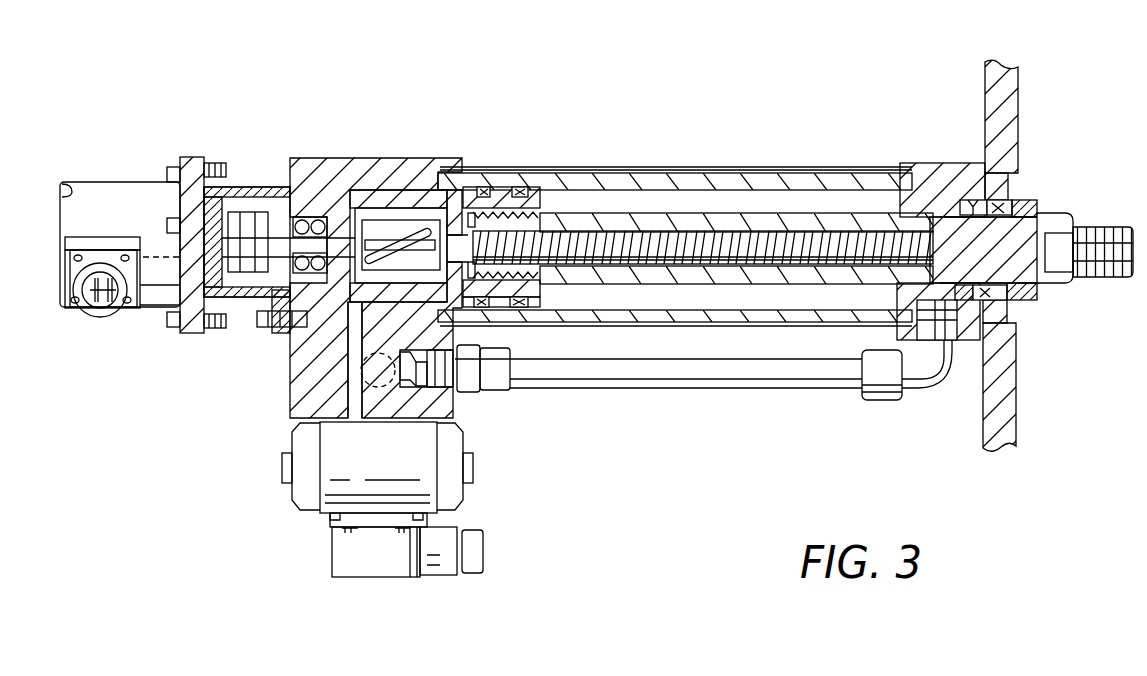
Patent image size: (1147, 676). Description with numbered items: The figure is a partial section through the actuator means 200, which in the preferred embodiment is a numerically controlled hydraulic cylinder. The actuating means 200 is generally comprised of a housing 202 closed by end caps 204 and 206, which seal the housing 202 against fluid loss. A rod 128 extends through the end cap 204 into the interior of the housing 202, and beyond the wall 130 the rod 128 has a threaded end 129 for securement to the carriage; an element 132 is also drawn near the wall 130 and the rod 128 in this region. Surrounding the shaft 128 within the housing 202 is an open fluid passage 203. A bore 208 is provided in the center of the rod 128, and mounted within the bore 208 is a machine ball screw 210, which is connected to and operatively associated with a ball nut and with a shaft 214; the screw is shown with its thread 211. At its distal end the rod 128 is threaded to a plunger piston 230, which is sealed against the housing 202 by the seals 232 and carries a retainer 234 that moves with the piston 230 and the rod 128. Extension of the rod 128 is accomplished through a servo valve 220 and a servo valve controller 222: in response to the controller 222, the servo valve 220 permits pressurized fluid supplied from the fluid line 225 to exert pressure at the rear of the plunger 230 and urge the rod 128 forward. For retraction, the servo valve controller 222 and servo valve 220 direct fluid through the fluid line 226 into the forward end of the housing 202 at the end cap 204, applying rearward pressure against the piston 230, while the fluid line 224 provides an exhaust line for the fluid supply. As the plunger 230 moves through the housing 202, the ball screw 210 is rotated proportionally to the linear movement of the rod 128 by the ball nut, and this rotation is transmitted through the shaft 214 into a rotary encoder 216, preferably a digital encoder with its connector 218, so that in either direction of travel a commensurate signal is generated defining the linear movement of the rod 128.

The actuator means 200 is at (712, 110).
The wall 130 is at (1012, 83).
The seal 132 is at (1033, 207).
The rod 128 is at (1057, 217).
The threaded end 129 is at (1093, 283).
The housing 202 is at (853, 173).
The open fluid passage 203 is at (765, 170).
The end cap 204 is at (933, 173).
The end cap 206 is at (350, 158).
The bore 208 is at (843, 228).
The machine ball screw 210 is at (625, 240).
The ball screw 211 is at (665, 237).
The shaft 214 is at (262, 200).
The rotary encoder 216 is at (122, 182).
The electrical connector 218 is at (104, 317).
The servo valve 220 is at (427, 447).
The servo valve controller 222 is at (403, 562).
The fluid line 224 is at (362, 373).
The fluid line 225 is at (355, 344).
The fluid line 226 is at (723, 383).
The plunger piston 230 is at (545, 200).
The seals 232 is at (523, 190).
The retainer 234 is at (470, 198).